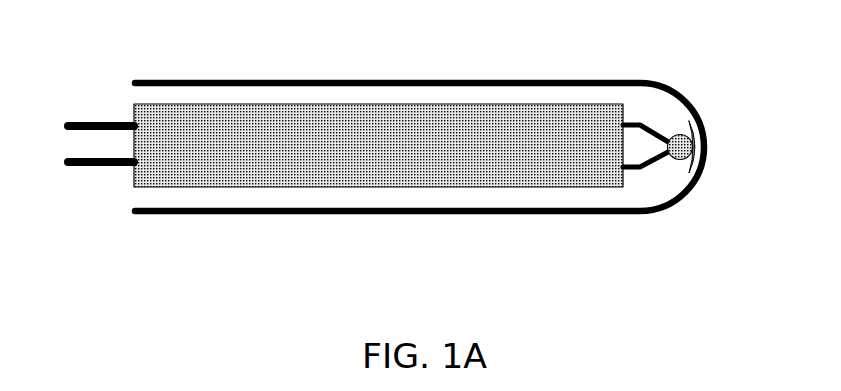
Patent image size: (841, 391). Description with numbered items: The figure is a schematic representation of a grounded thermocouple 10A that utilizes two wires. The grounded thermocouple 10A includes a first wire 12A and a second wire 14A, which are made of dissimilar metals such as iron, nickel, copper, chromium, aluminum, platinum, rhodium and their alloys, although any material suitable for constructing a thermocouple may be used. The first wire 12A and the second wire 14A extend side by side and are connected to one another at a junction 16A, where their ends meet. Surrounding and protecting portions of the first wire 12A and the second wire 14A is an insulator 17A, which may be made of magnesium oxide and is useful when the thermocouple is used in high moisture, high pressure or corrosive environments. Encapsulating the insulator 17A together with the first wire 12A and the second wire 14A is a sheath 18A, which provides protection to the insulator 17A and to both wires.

The grounded thermocouple 10A is at (415, 125).
The first wire 12A is at (100, 121).
The second wire 14A is at (100, 167).
The junction 16A is at (696, 139).
The insulator 17A is at (428, 117).
The sheath 18A is at (699, 173).